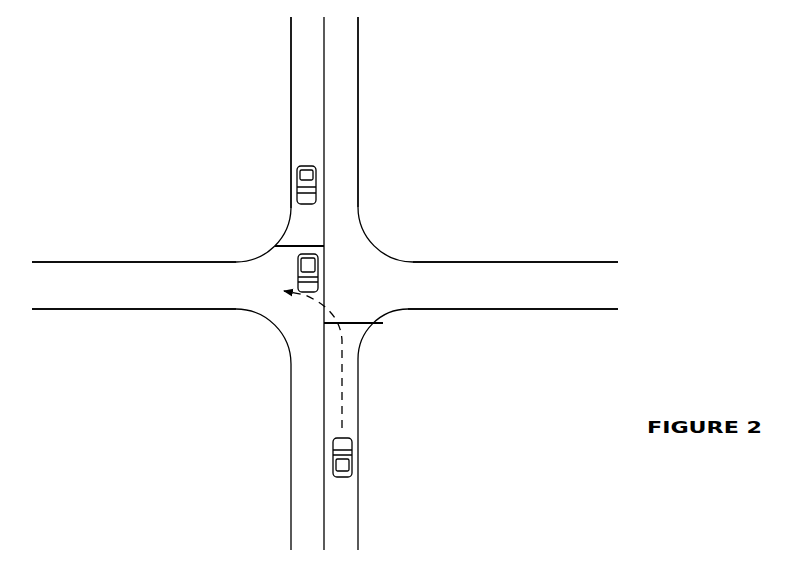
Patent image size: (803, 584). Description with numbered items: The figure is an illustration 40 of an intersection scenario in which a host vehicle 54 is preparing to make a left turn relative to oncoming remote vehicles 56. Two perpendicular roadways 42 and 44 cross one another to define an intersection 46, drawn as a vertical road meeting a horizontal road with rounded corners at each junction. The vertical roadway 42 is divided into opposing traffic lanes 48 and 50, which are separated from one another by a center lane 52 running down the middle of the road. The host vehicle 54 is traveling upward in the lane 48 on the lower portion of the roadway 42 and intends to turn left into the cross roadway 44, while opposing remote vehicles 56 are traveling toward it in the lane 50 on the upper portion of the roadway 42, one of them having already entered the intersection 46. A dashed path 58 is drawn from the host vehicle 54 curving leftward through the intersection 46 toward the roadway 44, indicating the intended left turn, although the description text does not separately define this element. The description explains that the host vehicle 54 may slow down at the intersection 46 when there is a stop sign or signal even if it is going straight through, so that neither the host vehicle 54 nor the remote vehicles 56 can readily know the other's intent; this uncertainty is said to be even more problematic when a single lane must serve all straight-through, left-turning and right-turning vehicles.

The illustration 40 is at (606, 92).
The roadway 42 is at (288, 148).
The roadway 44 is at (162, 277).
The intersection 46 is at (397, 330).
The traffic lane 48 is at (339, 68).
The traffic lane 50 is at (300, 97).
The center lane 52 is at (327, 227).
The host vehicle 54 is at (343, 468).
The remote vehicles 56 is at (297, 183).
The planned turn path 58 is at (343, 365).